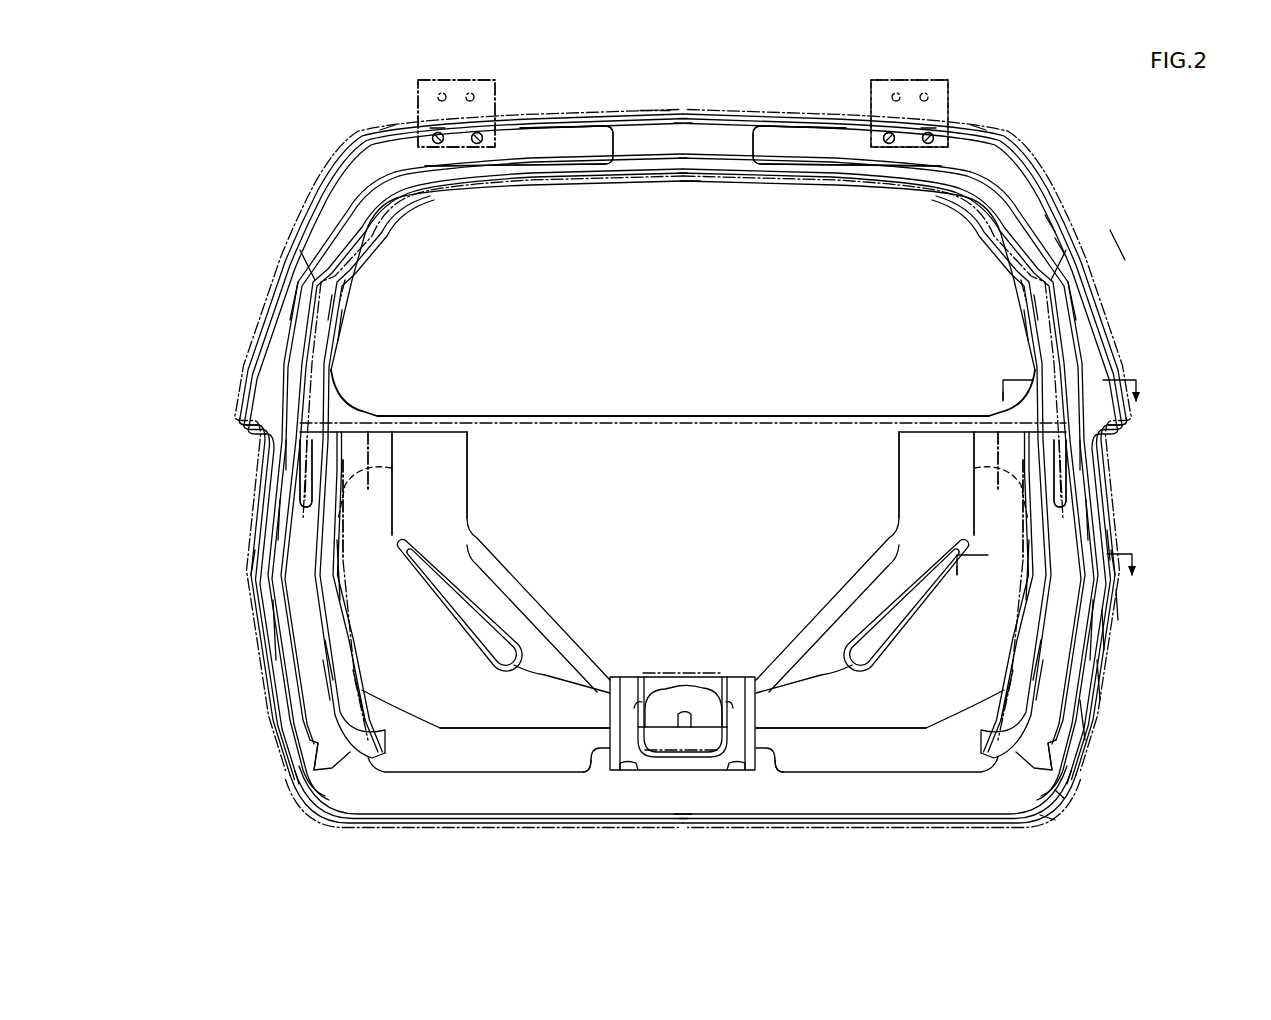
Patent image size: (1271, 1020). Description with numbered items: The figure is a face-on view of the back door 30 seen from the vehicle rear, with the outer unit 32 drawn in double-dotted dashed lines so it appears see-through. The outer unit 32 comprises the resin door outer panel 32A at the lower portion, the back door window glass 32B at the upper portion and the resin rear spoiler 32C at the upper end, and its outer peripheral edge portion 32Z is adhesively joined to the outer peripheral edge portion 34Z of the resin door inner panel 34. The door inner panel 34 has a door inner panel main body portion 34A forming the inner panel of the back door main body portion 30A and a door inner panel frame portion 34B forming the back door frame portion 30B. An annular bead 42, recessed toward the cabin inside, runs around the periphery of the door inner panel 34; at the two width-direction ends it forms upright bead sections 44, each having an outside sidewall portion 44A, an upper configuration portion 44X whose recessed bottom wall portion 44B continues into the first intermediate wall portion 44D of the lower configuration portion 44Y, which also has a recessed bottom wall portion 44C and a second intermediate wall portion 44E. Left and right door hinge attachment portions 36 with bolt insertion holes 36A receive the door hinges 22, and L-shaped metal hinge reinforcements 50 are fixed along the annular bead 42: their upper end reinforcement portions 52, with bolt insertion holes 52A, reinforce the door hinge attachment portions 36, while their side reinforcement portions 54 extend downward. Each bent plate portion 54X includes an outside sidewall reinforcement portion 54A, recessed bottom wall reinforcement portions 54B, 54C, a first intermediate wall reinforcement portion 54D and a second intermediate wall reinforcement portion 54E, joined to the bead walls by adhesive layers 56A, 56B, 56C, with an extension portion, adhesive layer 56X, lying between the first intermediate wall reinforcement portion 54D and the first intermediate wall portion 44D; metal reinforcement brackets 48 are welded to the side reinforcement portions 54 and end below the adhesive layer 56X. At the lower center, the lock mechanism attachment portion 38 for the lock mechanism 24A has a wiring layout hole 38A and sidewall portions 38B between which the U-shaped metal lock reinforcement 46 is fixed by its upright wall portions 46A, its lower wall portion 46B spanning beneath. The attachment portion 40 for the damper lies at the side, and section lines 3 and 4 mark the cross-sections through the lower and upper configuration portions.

The section line 3- 3 is at (957, 555).
The section line 4- 4 is at (1003, 381).
The door hinge 22 is at (485, 82).
The lock mechanism 24A is at (690, 670).
The back door 30 is at (1130, 247).
The back door main body portion 30A is at (1084, 716).
The back door frame portion 30B is at (1050, 223).
The outer unit 32 is at (1116, 541).
The door outer panel 32A is at (1124, 605).
The back door window glass 32B is at (690, 182).
The rear spoiler 32C is at (655, 109).
The outer peripheral edge portion of the outer unit 32Z is at (1063, 797).
The door inner panel 34 is at (1104, 682).
The door inner panel main body portion 34A is at (1102, 628).
The door inner panel frame portion 34B is at (1060, 243).
The outer peripheral edge portion of the door inner panel 34Z is at (1052, 818).
The door hinge attachment portion 36 is at (380, 130).
The bolt insertion hole 36A is at (432, 128).
The lock mechanism attachment portion 38 is at (740, 776).
The wiring layout hole 38A is at (684, 720).
The sidewall portion 38B is at (588, 758).
The attachment portion of the damper 40 is at (305, 371).
The annular bead 42 is at (352, 779).
The upright bead section 44 is at (278, 514).
The outside sidewall portion 44A is at (352, 480).
The recessed bottom wall portion 44B is at (340, 328).
The recessed bottom wall portion 44C is at (360, 596).
The first intermediate wall portion 44D is at (327, 651).
The second intermediate wall portion 44E is at (323, 673).
The upper configuration portion 44X is at (294, 283).
The lower configuration portion 44Y is at (272, 630).
The lock reinforcement 46 is at (645, 776).
The upright wall portion 46A is at (637, 688).
The lower wall portion 46B is at (663, 768).
The reinforcement bracket 48 is at (268, 392).
The hinge reinforcement 50 is at (305, 258).
The upper end reinforcement portion 52 is at (553, 135).
The bolt insertion hole 52A is at (476, 146).
The side reinforcement portion 54 is at (283, 448).
The outside sidewall reinforcement portion 54A is at (298, 462).
The recessed bottom wall reinforcement portion 54B is at (332, 305).
The recessed bottom wall reinforcement portion 54C is at (337, 556).
The first intermediate wall reinforcement portion 54D is at (362, 672).
The second intermediate wall reinforcement portion 54E is at (312, 679).
The bent plate portion 54X is at (303, 541).
The adhesive layer 56A is at (292, 488).
The adhesive layer 56B is at (350, 288).
The adhesive layer 56C is at (347, 526).
The adhesive layer extension portion 56X is at (370, 452).